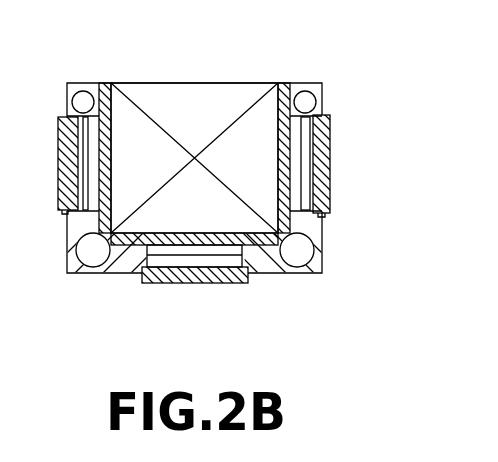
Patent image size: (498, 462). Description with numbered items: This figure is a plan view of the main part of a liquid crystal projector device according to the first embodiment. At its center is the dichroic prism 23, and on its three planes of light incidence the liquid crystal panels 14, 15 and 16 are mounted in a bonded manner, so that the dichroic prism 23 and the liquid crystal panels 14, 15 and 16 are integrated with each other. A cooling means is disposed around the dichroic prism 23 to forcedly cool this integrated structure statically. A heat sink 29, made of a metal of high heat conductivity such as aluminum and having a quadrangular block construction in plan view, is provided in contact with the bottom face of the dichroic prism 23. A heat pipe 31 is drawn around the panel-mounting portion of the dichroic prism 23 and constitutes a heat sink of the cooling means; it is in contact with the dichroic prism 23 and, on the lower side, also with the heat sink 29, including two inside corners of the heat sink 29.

The liquid crystal panel 14 is at (70, 155).
The liquid crystal panel 15 is at (187, 278).
The liquid crystal panel 16 is at (318, 155).
The dichroic prism 23 is at (191, 98).
The heat sink 29 is at (267, 260).
The heat pipe 31 is at (83, 97).